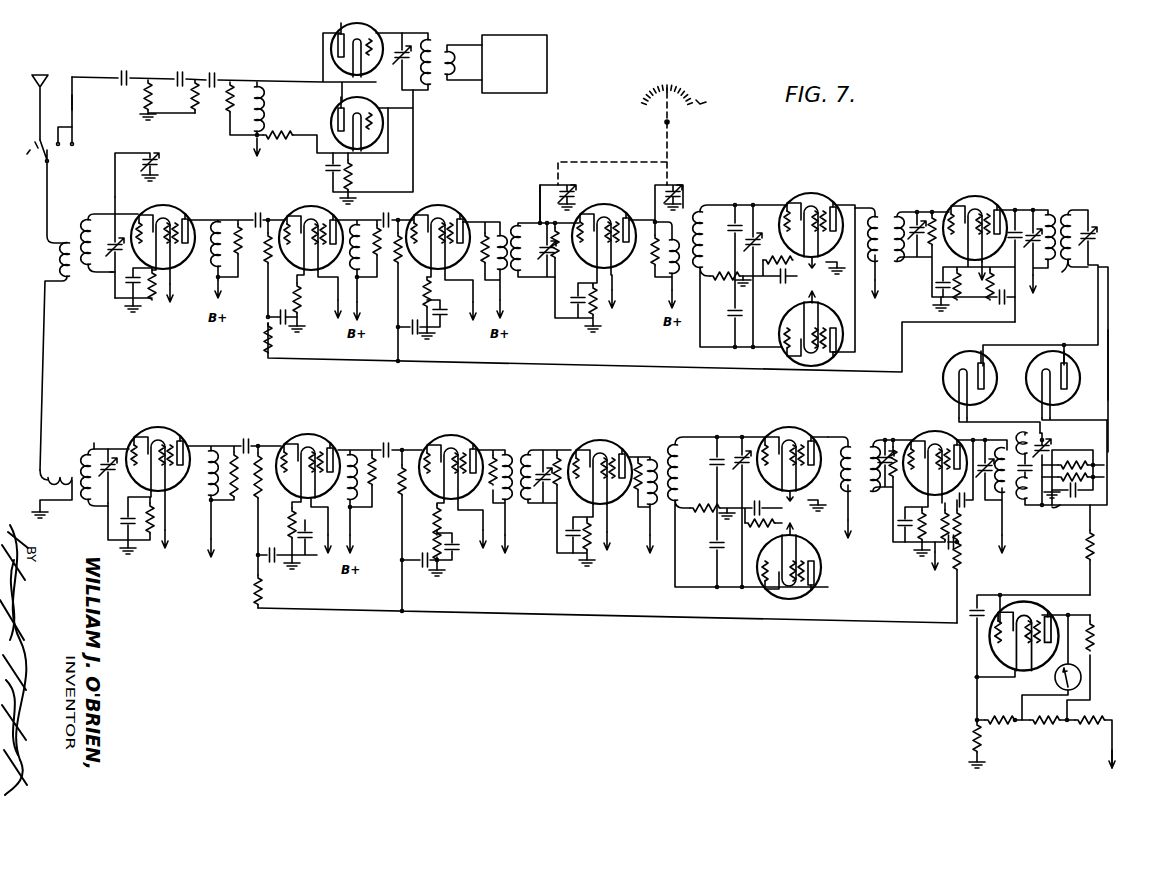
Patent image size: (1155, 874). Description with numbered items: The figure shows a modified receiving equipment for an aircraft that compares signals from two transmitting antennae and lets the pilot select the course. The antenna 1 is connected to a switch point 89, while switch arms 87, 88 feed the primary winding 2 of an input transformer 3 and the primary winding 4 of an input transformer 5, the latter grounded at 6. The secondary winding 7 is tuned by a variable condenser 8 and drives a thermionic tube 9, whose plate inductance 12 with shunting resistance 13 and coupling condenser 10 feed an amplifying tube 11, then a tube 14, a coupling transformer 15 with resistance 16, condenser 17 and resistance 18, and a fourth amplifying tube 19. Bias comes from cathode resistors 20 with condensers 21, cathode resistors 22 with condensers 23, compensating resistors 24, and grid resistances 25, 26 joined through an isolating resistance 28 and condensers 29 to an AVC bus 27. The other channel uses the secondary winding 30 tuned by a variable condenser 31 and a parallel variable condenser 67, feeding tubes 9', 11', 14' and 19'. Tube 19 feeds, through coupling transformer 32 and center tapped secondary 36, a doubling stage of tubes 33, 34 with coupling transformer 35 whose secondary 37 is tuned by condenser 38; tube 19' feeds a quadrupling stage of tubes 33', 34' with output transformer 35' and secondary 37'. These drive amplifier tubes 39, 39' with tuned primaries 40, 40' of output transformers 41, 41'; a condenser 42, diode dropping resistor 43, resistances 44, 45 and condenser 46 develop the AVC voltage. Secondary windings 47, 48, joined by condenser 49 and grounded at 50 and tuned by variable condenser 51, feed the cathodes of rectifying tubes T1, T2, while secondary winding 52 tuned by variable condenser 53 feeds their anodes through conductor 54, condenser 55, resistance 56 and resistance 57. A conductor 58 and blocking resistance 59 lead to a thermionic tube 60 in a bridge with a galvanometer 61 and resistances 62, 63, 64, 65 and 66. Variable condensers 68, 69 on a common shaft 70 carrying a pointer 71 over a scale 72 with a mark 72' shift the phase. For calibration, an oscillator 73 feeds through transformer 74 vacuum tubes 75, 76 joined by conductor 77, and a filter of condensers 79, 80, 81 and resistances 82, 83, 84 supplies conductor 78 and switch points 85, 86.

The antenna 1 is at (32, 80).
The primary winding 2 is at (56, 245).
The input transformer 3 is at (87, 281).
The primary winding 4 is at (43, 472).
The input transformer 5 is at (79, 505).
The ground 6 is at (30, 511).
The secondary winding 7 is at (90, 446).
The variable condenser 8 is at (111, 471).
The thermionic tube 9 is at (149, 485).
The amplifying tube 9' is at (158, 252).
The coupling condenser 10 is at (248, 441).
The amplifying tube 11 is at (308, 489).
The amplifying tube 11' is at (309, 260).
The plate inductance 12 is at (212, 490).
The resistance 13 is at (236, 499).
The tube 14 is at (450, 490).
The amplifying tube 14' is at (444, 261).
The coupling transformer 15 is at (528, 445).
The resistance 16 is at (496, 488).
The condenser 17 is at (542, 486).
The resistance 18 is at (558, 455).
The fourth amplifying tube 19 is at (599, 491).
The tube 19' is at (601, 254).
The resistors 20 is at (150, 542).
The condensers 21 is at (123, 524).
The cathode resistors 22 is at (292, 566).
The condensers 23 is at (306, 560).
The compensating resistors 24 is at (290, 514).
The grid resistance 25 is at (262, 485).
The grid resistance 26 is at (402, 492).
The AVC bus 27 is at (336, 611).
The isolating resistance 28 is at (256, 604).
The condensers 29 is at (268, 558).
The secondary winding 30 is at (93, 212).
The variable condenser 31 is at (114, 258).
The coupling transformer 32 is at (658, 451).
The tube 33 is at (791, 463).
The thermionic tube 33' is at (774, 251).
The tube 34 is at (778, 565).
The thermionic tube 34' is at (790, 328).
The coupling transformer 35 is at (847, 479).
The output transformer 35' is at (879, 248).
The center tapped secondary 36 is at (681, 441).
The secondary 37 is at (897, 470).
The secondary 37' is at (955, 239).
The condenser 38 is at (889, 482).
The amplifier tube 39 is at (952, 509).
The amplifier tube 39' is at (990, 245).
The tuned primary 40 is at (994, 507).
The tuned primary 40' is at (1041, 246).
The output transformer 41 is at (1050, 487).
The output transformer 41' is at (1045, 315).
The condenser 42 is at (966, 503).
The diode dropping resistor 43 is at (921, 535).
The resistance 44 is at (958, 538).
The resistance 45 is at (960, 568).
The condenser 46 is at (938, 548).
The secondary winding 47 is at (1022, 432).
The secondary winding 48 is at (1042, 508).
The condenser 49 is at (1029, 517).
The ground 50 is at (1052, 506).
The variable condenser 51 is at (1048, 449).
The secondary winding 52 is at (1063, 270).
The variable condenser 53 is at (1094, 237).
The conductor 54 is at (1110, 366).
The condenser 55 is at (1100, 492).
The resistance 56 is at (1100, 478).
The resistance 57 is at (1088, 463).
The conductor 58 is at (1093, 516).
The blocking resistance 59 is at (1095, 553).
The thermionic tube 60 is at (1040, 606).
The galvanometer 61 is at (1083, 672).
The resistance 62 is at (1046, 727).
The resistance 63 is at (1005, 726).
The resistance 64 is at (1097, 642).
The resistance 65 is at (1090, 727).
The resistance 66 is at (972, 747).
The variable condenser 67 is at (156, 161).
The variable condenser 68 is at (571, 192).
The variable condenser 69 is at (680, 193).
The common shaft 70 is at (669, 150).
The pointer 71 is at (664, 121).
The scale 72 is at (680, 83).
The point on scale 72' is at (718, 108).
The high frequency oscillator 73 is at (548, 70).
The transformer 74 is at (438, 52).
The vacuum tube 75 is at (343, 33).
The vacuum tube 76 is at (343, 122).
The conductor 77 is at (294, 80).
The conductor 78 is at (72, 110).
The condenser 79 is at (127, 76).
The condenser 80 is at (182, 76).
The condenser 81 is at (214, 76).
The resistance 82 is at (146, 100).
The resistance 83 is at (198, 110).
The resistance 84 is at (233, 92).
The stationary switch point 85 is at (60, 147).
The stationary switch point 86 is at (74, 144).
The switch arm 87 is at (30, 155).
The switch arm 88 is at (49, 163).
The switch point 89 is at (35, 143).
The rectifying tube T1 is at (962, 364).
The rectifying tube T2 is at (1031, 392).